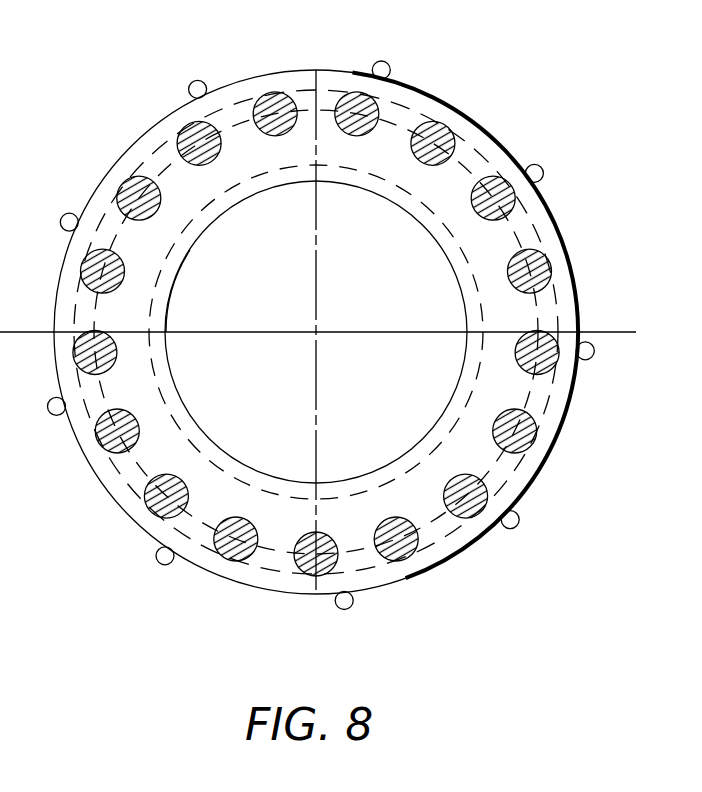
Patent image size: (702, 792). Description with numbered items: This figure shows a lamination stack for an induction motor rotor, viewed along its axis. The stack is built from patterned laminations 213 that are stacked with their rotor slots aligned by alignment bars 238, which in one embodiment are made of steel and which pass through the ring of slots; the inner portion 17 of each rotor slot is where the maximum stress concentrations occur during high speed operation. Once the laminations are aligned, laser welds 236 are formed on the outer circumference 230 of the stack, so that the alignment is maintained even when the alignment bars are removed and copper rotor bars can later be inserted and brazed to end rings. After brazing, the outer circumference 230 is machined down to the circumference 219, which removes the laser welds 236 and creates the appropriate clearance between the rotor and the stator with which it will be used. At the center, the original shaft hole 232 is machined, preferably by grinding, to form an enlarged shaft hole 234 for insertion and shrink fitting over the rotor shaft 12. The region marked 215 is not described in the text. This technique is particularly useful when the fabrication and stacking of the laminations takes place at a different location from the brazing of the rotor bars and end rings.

The rotor shaft 12 is at (388, 291).
The inner portion of the rotor slot 17 is at (415, 150).
The patterned laminations 213 is at (542, 178).
The flange ring 215 is at (228, 115).
The circumference 219 is at (545, 226).
The outer circumference 230 is at (582, 310).
The original shaft hole 232 is at (190, 250).
The enlarged shaft hole 234 is at (153, 319).
The laser welds 236 is at (519, 520).
The alignment bars 238 is at (379, 104).